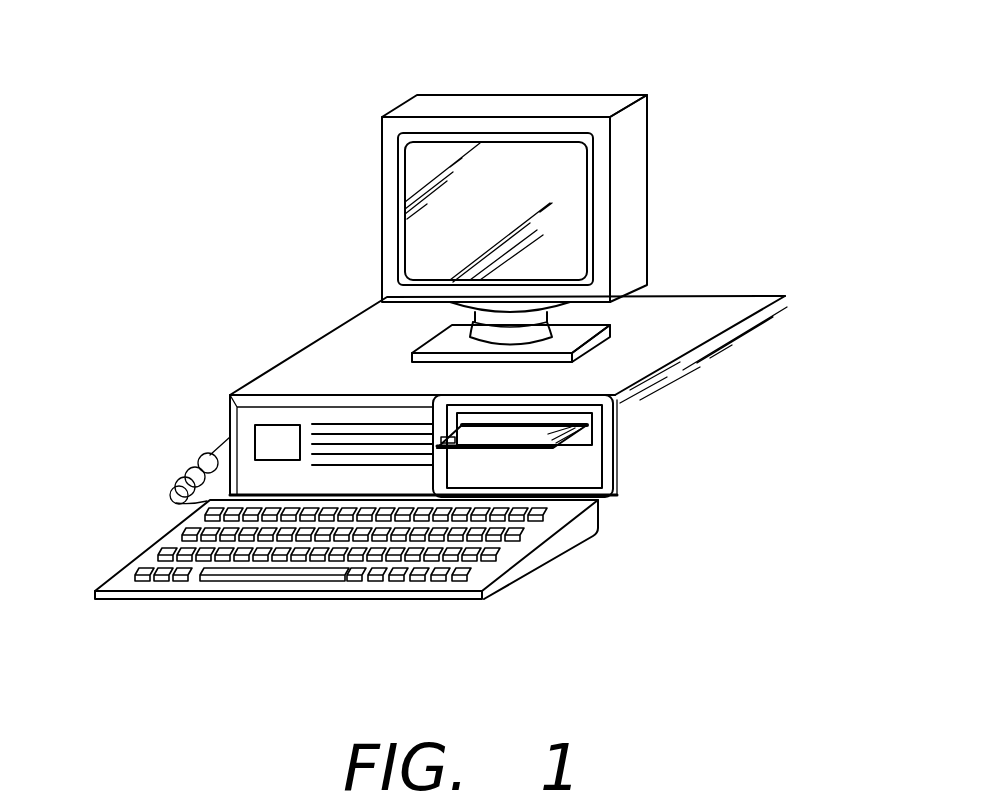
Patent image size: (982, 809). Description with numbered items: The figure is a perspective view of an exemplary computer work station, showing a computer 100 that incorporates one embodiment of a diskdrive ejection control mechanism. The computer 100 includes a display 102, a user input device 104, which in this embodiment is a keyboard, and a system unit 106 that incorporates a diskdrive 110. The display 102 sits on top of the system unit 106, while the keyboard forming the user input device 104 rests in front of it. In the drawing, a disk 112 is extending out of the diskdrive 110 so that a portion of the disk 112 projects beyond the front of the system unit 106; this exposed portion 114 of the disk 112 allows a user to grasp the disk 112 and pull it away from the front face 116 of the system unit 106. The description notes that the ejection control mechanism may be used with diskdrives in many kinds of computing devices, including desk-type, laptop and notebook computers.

The computer 100 is at (256, 121).
The display 102 is at (508, 157).
The user input device 104 is at (143, 560).
The system unit 106 is at (300, 415).
The diskdrive 110 is at (583, 480).
The disk 112 is at (498, 480).
The exposed portion 114 is at (580, 429).
The front face 116 is at (597, 418).